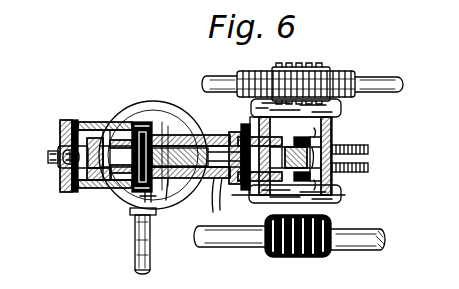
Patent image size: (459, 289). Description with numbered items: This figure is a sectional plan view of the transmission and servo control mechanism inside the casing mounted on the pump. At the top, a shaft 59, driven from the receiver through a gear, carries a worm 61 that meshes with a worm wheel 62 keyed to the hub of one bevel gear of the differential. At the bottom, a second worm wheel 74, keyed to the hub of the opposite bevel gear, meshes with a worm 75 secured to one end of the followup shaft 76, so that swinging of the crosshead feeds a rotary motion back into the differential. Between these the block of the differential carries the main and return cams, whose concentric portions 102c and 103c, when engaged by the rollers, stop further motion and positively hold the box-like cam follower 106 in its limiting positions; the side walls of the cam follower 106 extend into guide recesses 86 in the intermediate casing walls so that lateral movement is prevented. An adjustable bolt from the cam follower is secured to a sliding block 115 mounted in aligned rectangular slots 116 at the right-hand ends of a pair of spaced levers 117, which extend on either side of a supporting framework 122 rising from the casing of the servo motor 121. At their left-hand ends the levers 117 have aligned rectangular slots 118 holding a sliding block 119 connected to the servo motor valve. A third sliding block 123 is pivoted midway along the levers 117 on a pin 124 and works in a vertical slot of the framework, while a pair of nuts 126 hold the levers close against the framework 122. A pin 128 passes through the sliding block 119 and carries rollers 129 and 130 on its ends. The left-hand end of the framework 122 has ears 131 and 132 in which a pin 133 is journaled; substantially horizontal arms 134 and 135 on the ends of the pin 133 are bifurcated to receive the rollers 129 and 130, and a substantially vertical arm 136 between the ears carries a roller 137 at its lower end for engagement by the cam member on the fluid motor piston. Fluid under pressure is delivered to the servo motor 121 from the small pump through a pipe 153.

The shaft 59 is at (380, 77).
The worm 61 is at (310, 70).
The worm wheel 62 is at (340, 75).
The worm wheel 74 is at (260, 250).
The worm 75 is at (308, 257).
The followup shaft 76 is at (346, 250).
The guide recesses 86 is at (341, 110).
The concentric portion of main cam 102c is at (368, 152).
The concentric portion of return cam 103c is at (368, 170).
The cam follower 106 is at (336, 182).
The sliding block 115 is at (331, 147).
The rectangular slots 116 is at (270, 144).
The levers 117 is at (298, 170).
The rectangular slots 118 is at (153, 190).
The sliding block 119 is at (137, 122).
The servo motor 121 is at (162, 110).
The supporting framework 122 is at (172, 202).
The sliding block 123 is at (220, 184).
The pin 124 is at (216, 135).
The nuts 126 is at (236, 132).
The pin 128 is at (148, 122).
The roller 129 is at (160, 124).
The roller 130 is at (132, 198).
The ear 131 is at (92, 122).
The ear 132 is at (88, 189).
The pin 133 is at (60, 126).
The horizontal arm 134 is at (106, 130).
The horizontal arm 135 is at (96, 190).
The vertical arm 136 is at (54, 150).
The roller 137 is at (46, 158).
The pipe 153 is at (135, 252).